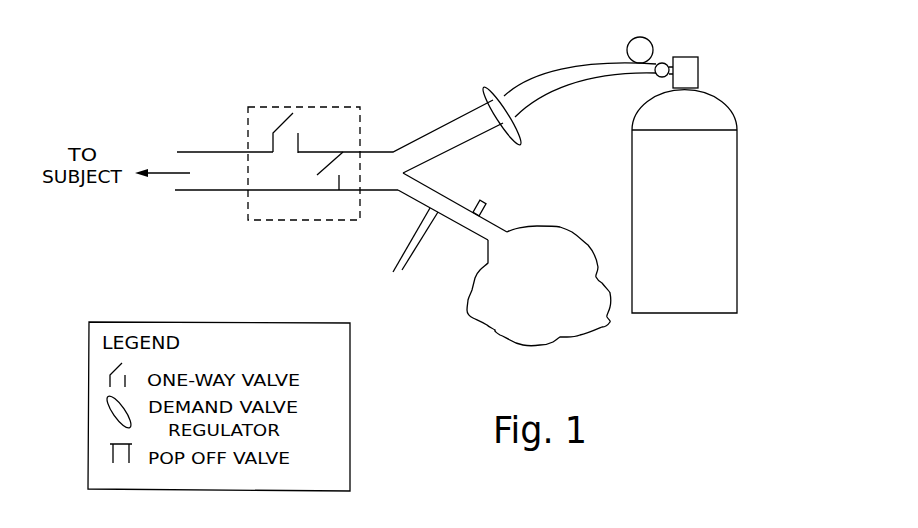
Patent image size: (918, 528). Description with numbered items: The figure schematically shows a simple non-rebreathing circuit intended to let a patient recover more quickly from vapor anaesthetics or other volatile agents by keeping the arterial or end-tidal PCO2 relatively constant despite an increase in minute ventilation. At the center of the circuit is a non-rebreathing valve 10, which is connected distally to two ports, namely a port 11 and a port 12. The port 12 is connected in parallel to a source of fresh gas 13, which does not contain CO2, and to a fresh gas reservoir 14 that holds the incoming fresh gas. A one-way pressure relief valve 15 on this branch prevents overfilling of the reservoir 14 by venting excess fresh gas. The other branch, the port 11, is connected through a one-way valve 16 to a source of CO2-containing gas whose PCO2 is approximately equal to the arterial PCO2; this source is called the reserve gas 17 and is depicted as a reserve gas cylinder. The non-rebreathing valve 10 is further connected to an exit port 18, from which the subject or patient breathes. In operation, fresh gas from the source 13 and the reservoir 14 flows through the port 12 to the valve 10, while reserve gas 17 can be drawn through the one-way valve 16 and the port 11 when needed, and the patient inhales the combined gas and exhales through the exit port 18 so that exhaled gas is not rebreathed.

The non-rebreathing valve 10 is at (316, 58).
The port 11 is at (441, 156).
The port 12 is at (434, 190).
The source of fresh gas 13 is at (410, 258).
The fresh gas reservoir 14 is at (583, 336).
The one-way pressure relief valve 15 is at (482, 210).
The one-way valve 16 is at (518, 123).
The reserve gas 17 is at (737, 192).
The exit port 18 is at (208, 138).